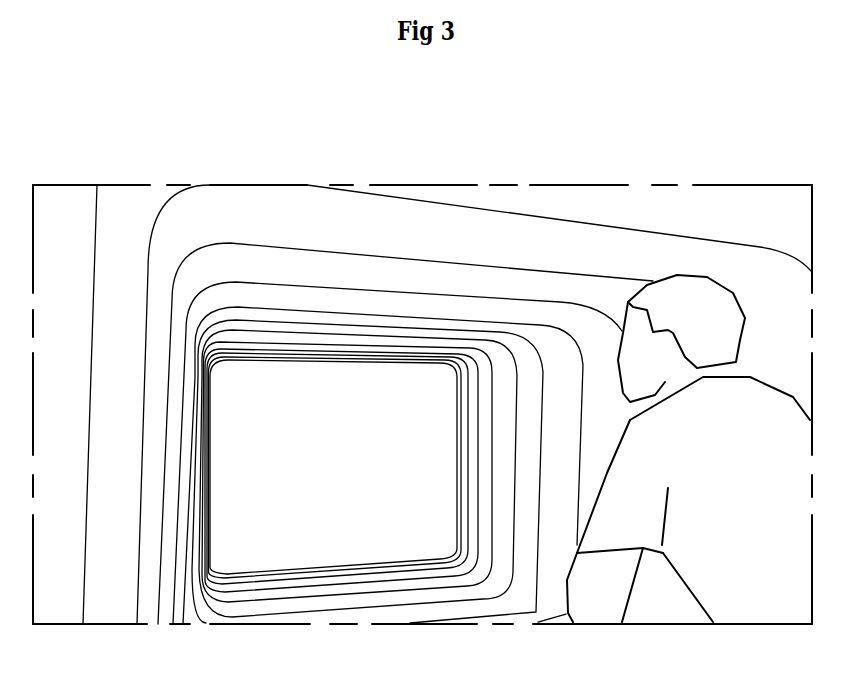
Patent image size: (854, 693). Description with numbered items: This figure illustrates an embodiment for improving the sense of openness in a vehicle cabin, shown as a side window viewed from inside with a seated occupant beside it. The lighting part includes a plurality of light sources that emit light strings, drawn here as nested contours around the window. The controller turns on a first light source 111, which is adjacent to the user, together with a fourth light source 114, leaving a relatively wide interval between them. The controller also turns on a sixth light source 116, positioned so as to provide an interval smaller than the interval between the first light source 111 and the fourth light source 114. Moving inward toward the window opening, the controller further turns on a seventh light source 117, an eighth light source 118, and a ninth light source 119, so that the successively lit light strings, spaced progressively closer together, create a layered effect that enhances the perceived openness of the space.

The first light source 111 is at (662, 233).
The fourth light source 114 is at (578, 272).
The sixth light source 116 is at (506, 300).
The seventh light source 117 is at (438, 320).
The eighth light source 118 is at (386, 331).
The ninth light source 119 is at (317, 334).